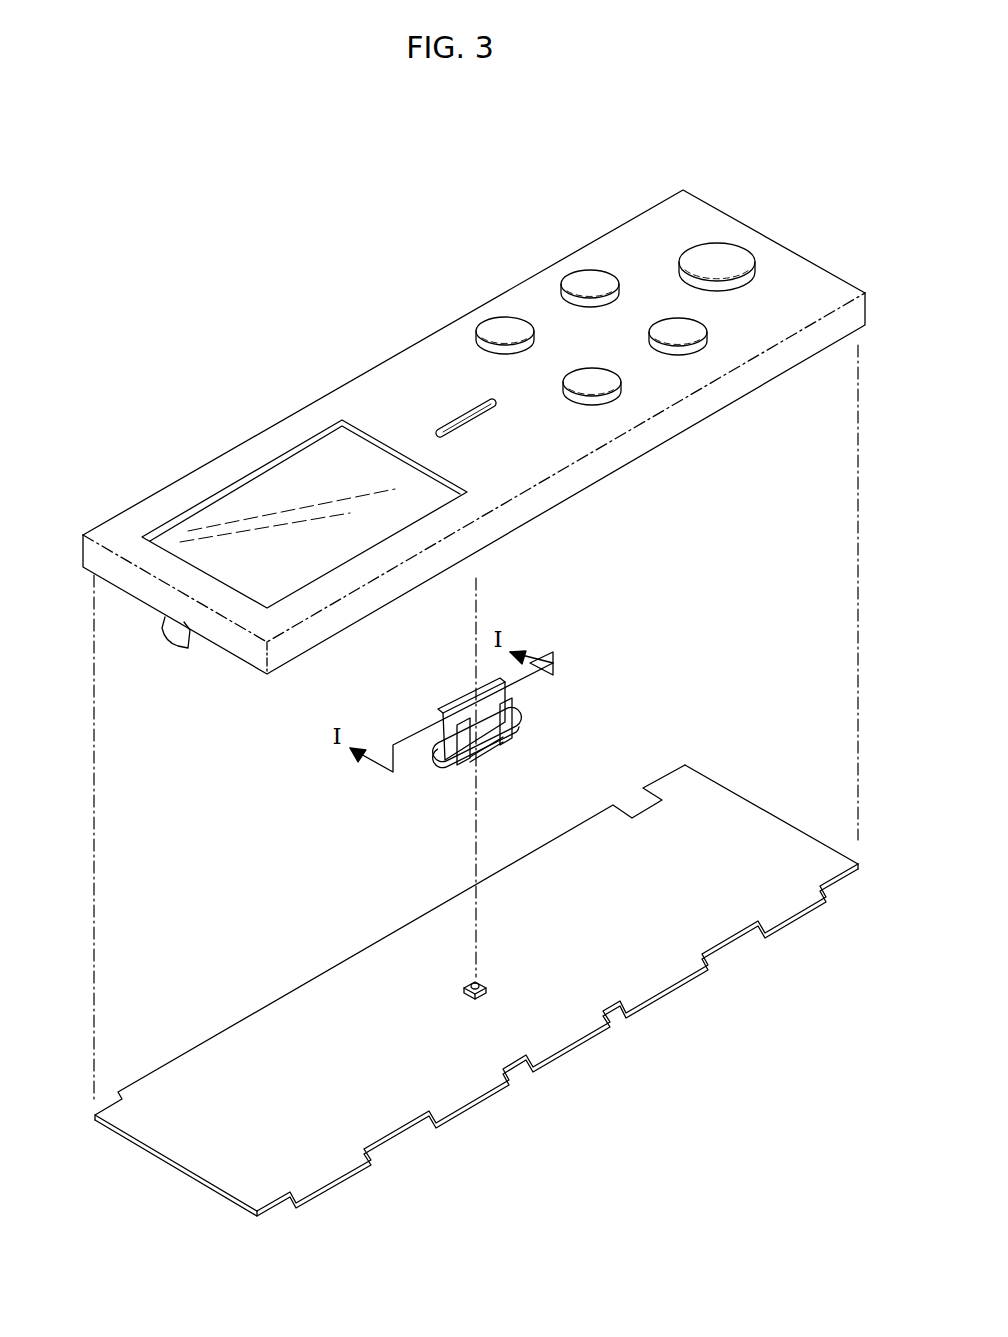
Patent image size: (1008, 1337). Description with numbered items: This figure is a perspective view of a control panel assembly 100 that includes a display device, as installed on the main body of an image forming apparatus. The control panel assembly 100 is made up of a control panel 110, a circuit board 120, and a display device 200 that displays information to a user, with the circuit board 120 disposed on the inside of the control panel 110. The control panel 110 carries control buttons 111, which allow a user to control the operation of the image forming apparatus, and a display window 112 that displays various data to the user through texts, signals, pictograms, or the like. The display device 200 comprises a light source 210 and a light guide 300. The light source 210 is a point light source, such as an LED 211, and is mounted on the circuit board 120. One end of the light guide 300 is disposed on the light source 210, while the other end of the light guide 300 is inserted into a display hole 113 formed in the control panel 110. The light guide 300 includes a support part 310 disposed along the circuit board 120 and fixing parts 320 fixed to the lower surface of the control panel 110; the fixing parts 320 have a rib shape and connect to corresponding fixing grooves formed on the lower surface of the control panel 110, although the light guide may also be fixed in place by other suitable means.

The control panel assembly 100 is at (413, 1197).
The control panel 110 is at (672, 213).
The control buttons 111 is at (500, 330).
The display window 112 is at (287, 485).
The display hole 113 is at (465, 420).
The circuit board 120 is at (722, 812).
The display device 200 is at (298, 823).
The light source 210 is at (455, 981).
The LED 211 is at (482, 978).
The light guide 300 is at (418, 783).
The support part 310 is at (443, 777).
The fixing parts 320 is at (483, 759).